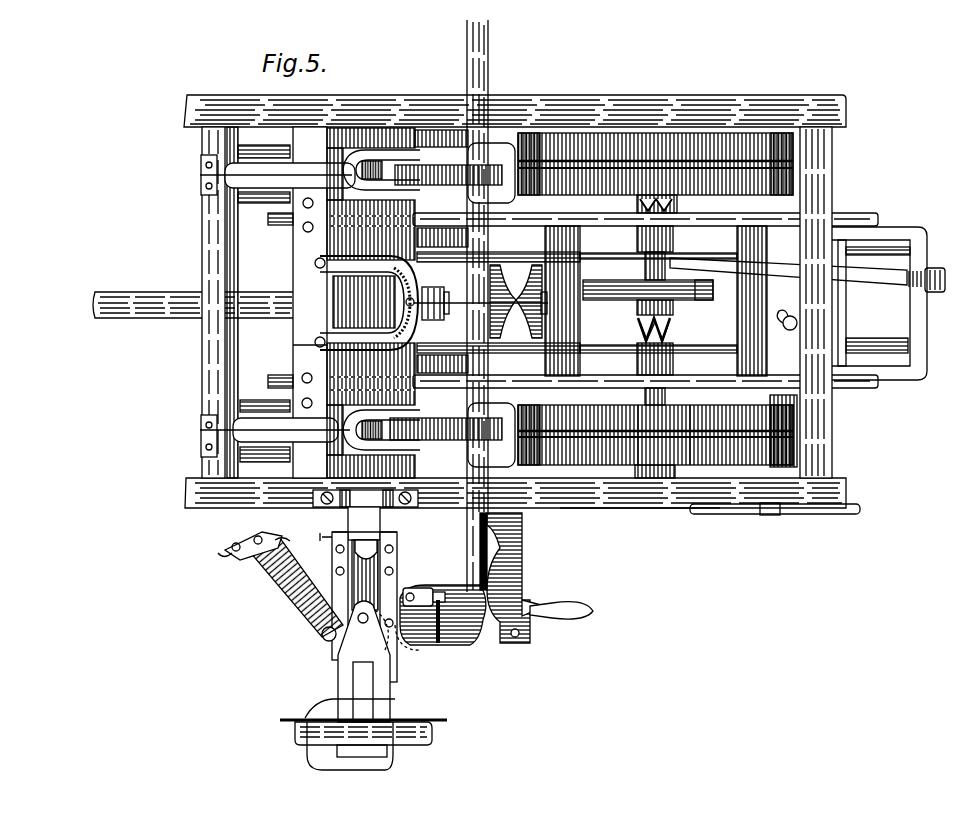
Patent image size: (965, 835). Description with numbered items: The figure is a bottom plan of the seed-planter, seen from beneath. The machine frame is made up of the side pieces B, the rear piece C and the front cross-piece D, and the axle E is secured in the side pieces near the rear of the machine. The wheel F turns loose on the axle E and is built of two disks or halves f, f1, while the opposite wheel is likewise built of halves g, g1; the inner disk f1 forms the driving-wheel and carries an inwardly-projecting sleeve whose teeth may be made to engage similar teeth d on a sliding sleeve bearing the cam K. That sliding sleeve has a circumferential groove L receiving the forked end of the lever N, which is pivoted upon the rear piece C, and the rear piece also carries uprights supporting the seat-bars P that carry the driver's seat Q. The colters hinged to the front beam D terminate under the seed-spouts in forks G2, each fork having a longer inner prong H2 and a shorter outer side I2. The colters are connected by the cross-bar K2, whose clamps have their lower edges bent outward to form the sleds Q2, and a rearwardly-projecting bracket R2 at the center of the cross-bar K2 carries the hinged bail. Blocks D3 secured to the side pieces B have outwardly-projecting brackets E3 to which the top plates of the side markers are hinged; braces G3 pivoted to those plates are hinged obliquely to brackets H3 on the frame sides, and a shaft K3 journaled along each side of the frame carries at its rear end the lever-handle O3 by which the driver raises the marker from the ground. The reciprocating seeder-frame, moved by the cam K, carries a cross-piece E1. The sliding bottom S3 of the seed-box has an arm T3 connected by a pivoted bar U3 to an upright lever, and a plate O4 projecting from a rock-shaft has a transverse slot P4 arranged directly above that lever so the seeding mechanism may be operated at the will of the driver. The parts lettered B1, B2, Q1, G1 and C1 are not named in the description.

The side pieces B is at (506, 101).
The cross bars B1 is at (645, 300).
The brackets B2 is at (512, 190).
The front cross-piece D is at (223, 325).
The guide bars Q1 is at (238, 182).
The sled Q2 is at (245, 416).
The outside prong of fork I2 is at (351, 293).
The inner prong of fork H2 is at (420, 422).
The forks G2 is at (371, 303).
The bracket R2 is at (366, 303).
The cross-bar K2 is at (296, 347).
The cross-piece E1 is at (450, 286).
The rear piece C is at (518, 301).
The wheel F is at (655, 164).
The disk of wheel f is at (655, 153).
The inner disk f1 is at (655, 178).
The seat-bars P is at (656, 301).
The cam K is at (648, 273).
The teeth d is at (695, 298).
The axle E is at (672, 329).
The circumferential groove L is at (676, 260).
The lower roller G1 is at (655, 435).
The disk of wheel g is at (655, 421).
The disk of wheel g1 is at (655, 445).
The right post C1 is at (816, 302).
The lever N is at (879, 303).
The driver's seat Q is at (877, 332).
The lever-handle O3 is at (775, 518).
The blocks D3 is at (365, 498).
The brackets E3 is at (364, 558).
The sliding bottom S3 is at (358, 627).
The braces G3 is at (285, 590).
The brackets H3 is at (225, 545).
The plate O4 is at (443, 615).
The pivoted bar U3 is at (412, 590).
The transverse slot P4 is at (440, 642).
The arm T3 is at (408, 646).
The shaft K3 is at (636, 509).